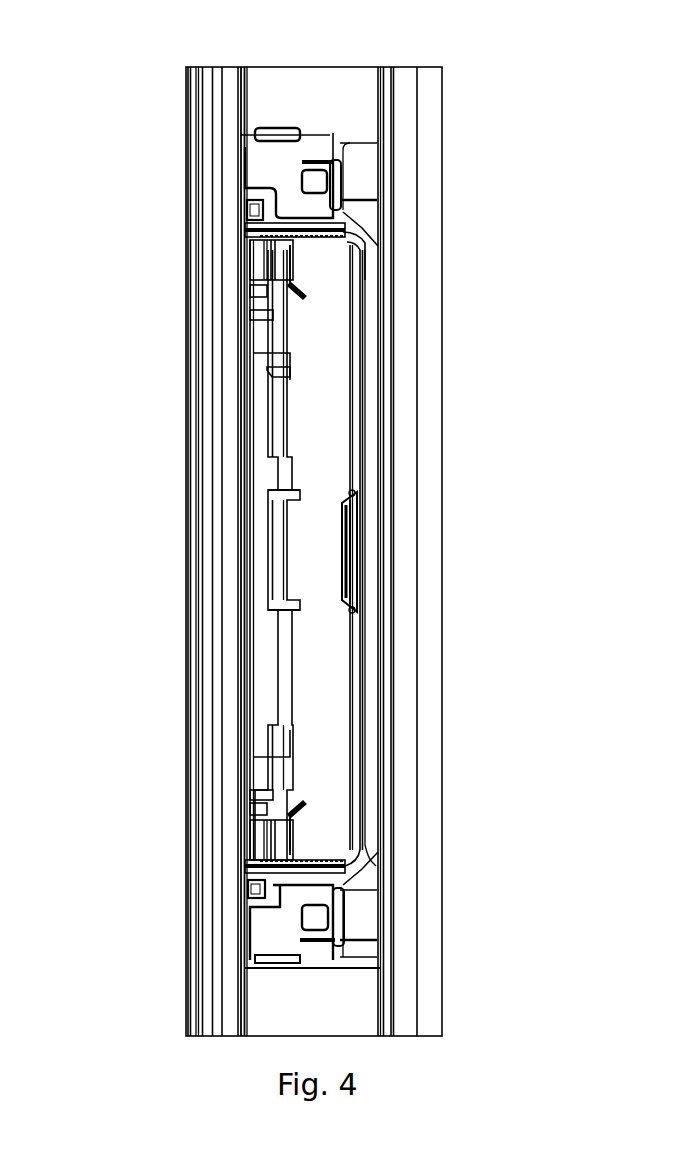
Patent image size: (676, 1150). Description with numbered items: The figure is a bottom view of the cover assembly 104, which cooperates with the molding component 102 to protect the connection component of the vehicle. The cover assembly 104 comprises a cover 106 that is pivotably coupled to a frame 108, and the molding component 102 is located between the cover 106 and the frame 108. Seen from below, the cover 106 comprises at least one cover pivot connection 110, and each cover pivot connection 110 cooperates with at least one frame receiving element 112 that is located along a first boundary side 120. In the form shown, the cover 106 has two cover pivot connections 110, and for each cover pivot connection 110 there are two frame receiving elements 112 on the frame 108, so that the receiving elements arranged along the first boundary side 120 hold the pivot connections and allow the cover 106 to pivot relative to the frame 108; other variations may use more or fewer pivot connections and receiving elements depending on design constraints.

The molding component 102 is at (355, 101).
The cover assembly 104 is at (146, 160).
The cover 106 is at (340, 416).
The frame 108 is at (265, 937).
The cover pivot connection 110 is at (250, 262).
The frame receiving element 112 is at (247, 213).
The first boundary side 120 is at (237, 567).